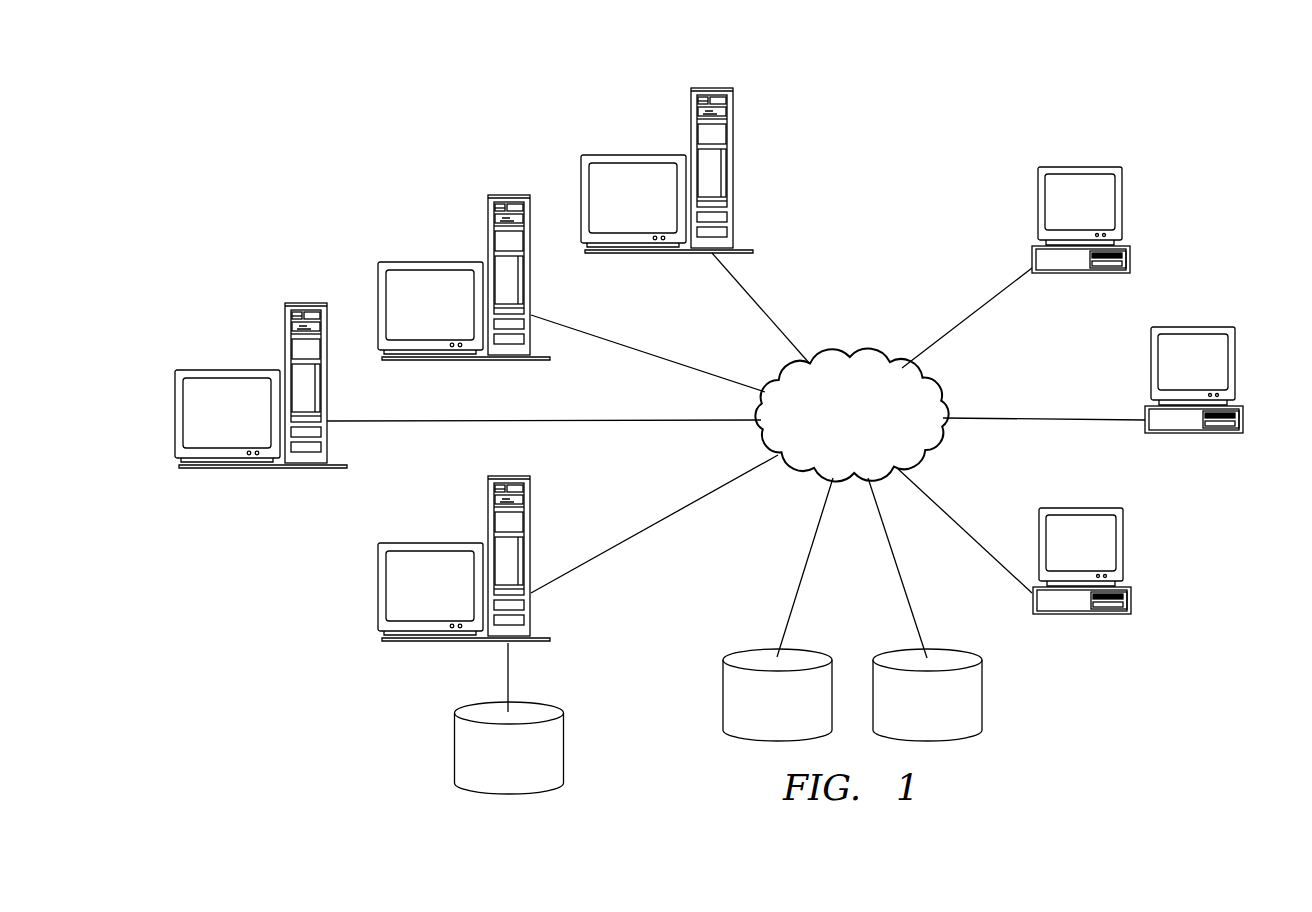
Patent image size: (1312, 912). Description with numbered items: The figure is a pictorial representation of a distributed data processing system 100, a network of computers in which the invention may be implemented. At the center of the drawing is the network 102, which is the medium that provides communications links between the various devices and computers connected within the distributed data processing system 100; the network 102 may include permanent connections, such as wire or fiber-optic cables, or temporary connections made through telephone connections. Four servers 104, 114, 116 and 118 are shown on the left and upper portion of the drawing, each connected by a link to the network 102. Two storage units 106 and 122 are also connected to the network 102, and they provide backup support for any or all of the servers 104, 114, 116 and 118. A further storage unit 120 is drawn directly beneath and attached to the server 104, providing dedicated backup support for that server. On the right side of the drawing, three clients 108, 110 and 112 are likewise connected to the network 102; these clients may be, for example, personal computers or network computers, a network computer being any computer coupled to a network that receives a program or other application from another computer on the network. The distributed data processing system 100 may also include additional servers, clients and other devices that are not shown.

The distributed data processing system 100 is at (950, 128).
The network 102 is at (872, 431).
The server 104 is at (438, 526).
The storage unit 106 is at (982, 690).
The client 108 is at (1116, 150).
The client 110 is at (1231, 310).
The client 112 is at (1123, 525).
The server 114 is at (237, 354).
The server 116 is at (438, 246).
The server 118 is at (640, 139).
The storage unit 120 is at (455, 745).
The storage unit 122 is at (723, 692).